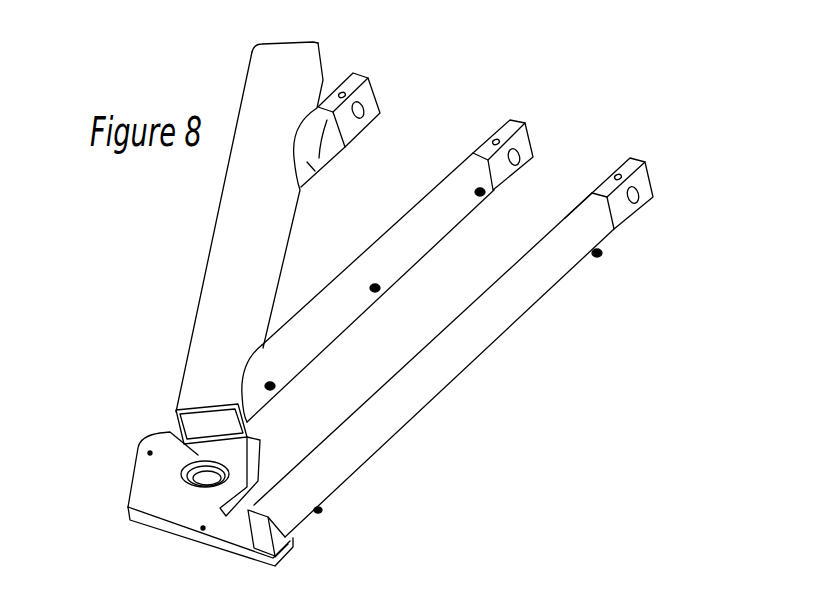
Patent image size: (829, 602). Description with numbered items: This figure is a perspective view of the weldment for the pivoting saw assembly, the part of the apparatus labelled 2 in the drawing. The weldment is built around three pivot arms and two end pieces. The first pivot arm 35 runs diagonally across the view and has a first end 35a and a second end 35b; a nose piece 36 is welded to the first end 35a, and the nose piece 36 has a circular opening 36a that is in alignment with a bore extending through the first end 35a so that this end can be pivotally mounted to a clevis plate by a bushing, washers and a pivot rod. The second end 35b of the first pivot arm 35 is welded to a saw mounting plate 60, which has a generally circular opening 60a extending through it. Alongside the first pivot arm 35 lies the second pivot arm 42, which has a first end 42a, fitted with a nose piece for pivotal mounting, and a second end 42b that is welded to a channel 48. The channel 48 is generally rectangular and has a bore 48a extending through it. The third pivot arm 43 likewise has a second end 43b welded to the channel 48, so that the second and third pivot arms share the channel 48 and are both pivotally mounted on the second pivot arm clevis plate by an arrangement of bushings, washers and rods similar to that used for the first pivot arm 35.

The section line / assembly 2 is at (317, 43).
The first pivot arm 35 is at (458, 358).
The first end of the first pivot arm 35a is at (593, 215).
The second end of the first pivot arm 35b is at (288, 521).
The nose piece 36 is at (620, 158).
The circular opening 36a is at (642, 205).
The second pivot arm 42 is at (407, 263).
The first end of the second pivot arm 42a is at (475, 178).
The second end of the second pivot arm 42b is at (280, 320).
The third pivot arm 43 is at (360, 136).
The second end of the third pivot arm 43b is at (312, 188).
The channel 48 is at (228, 278).
The bore 48a is at (195, 458).
The saw mounting plate 60 is at (127, 507).
The circular opening 60a is at (170, 432).